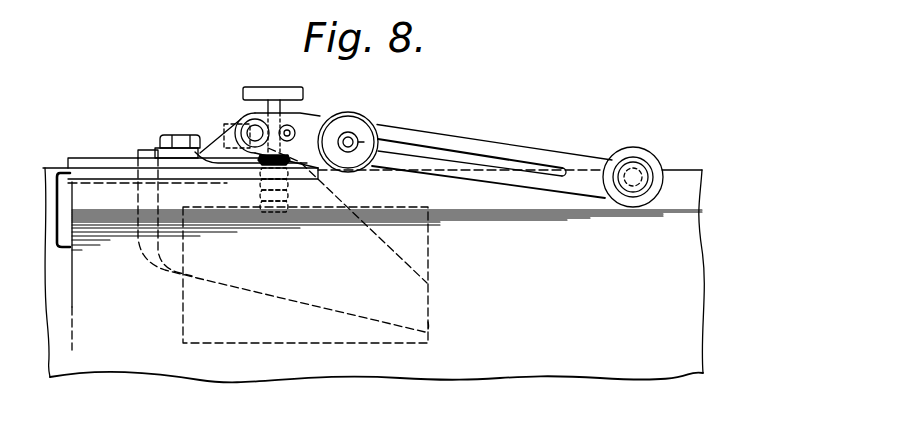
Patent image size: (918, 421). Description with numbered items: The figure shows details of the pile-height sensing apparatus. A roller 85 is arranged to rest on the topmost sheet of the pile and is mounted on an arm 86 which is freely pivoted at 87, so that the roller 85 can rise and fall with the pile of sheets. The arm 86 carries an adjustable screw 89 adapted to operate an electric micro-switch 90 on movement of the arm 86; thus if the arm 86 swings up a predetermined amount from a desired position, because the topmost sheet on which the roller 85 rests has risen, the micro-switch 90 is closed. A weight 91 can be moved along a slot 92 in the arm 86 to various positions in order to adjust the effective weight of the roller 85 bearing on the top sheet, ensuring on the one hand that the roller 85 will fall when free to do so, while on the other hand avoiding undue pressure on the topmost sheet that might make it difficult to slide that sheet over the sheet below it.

The roller 85 is at (650, 162).
The arm 86 is at (582, 166).
The pivot 87 is at (243, 128).
The adjustable screw 89 is at (254, 91).
The electric micro-switch 90 is at (260, 190).
The weight 91 is at (355, 124).
The slot 92 is at (432, 148).